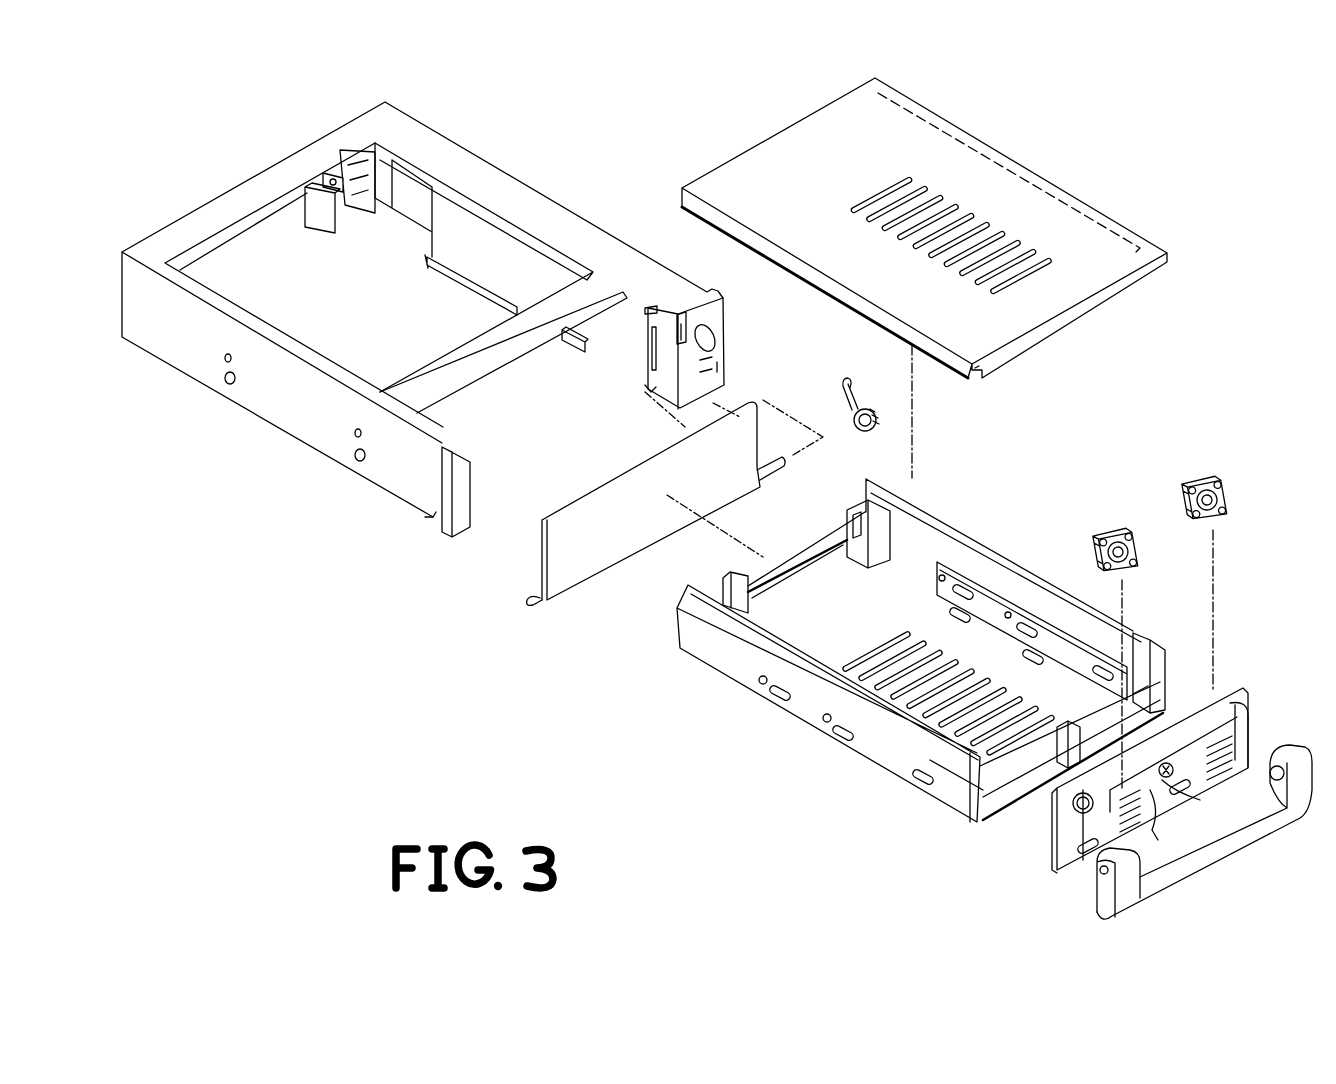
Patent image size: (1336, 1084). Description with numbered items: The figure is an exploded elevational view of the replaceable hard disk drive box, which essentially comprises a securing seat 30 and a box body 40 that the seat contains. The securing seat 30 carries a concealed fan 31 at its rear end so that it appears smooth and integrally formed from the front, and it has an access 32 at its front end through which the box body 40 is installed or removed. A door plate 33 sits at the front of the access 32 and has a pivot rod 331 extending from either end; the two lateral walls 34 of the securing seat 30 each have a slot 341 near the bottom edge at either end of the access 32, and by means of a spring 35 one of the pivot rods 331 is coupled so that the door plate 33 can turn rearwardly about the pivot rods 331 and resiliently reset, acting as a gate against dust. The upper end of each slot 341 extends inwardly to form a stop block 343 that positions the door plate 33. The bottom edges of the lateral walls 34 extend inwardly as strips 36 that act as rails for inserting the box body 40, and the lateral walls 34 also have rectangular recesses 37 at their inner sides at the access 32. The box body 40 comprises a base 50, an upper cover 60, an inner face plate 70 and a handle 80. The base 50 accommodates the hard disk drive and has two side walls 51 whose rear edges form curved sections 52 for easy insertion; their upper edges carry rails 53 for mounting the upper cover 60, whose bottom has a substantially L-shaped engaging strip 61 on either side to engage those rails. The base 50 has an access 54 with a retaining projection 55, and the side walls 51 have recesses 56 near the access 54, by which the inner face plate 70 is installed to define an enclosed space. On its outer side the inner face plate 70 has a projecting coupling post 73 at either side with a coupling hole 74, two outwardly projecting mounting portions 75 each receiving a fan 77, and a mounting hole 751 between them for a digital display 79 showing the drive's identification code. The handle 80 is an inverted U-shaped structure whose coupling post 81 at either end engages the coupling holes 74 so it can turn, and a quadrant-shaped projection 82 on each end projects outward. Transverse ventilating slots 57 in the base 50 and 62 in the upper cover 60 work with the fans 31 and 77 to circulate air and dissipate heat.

The securing seat 30 is at (431, 313).
The concealed fan 31 is at (345, 175).
The access 32 is at (542, 436).
The door plate 33 is at (671, 533).
The pivot rod 331 is at (536, 612).
The lateral wall 34 is at (503, 245).
The slot 341 is at (437, 517).
The stop block 343 is at (650, 306).
The spring 35 is at (862, 432).
The strip 36 is at (457, 277).
The rectangular recess 37 is at (683, 316).
The box body 40 is at (1212, 313).
The base 50 is at (925, 669).
The side wall 51 is at (1050, 590).
The curved section 52 is at (688, 640).
The rail 53 is at (735, 620).
The access 54 is at (1003, 772).
The retaining projection 55 is at (1066, 772).
The recess 56 is at (1150, 640).
The transverse ventilating slots 57 is at (905, 633).
The upper cover 60 is at (924, 278).
The L-shaped engaging strip 61 is at (978, 383).
The transverse ventilating slots 62 is at (1045, 265).
The inner face plate 70 is at (1120, 752).
The coupling post 73 is at (1240, 695).
The coupling hole 74 is at (1055, 862).
The mounting portion 75 is at (1200, 780).
The mounting hole 751 is at (1158, 800).
The fan 77 is at (1108, 535).
The digital display 79 is at (1175, 770).
The handle 80 is at (1192, 777).
The coupling post 81 is at (1275, 765).
The projection 82 is at (1098, 880).